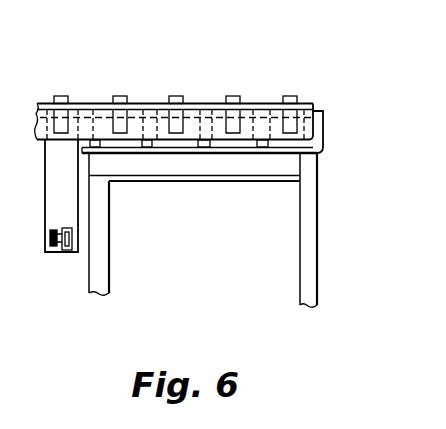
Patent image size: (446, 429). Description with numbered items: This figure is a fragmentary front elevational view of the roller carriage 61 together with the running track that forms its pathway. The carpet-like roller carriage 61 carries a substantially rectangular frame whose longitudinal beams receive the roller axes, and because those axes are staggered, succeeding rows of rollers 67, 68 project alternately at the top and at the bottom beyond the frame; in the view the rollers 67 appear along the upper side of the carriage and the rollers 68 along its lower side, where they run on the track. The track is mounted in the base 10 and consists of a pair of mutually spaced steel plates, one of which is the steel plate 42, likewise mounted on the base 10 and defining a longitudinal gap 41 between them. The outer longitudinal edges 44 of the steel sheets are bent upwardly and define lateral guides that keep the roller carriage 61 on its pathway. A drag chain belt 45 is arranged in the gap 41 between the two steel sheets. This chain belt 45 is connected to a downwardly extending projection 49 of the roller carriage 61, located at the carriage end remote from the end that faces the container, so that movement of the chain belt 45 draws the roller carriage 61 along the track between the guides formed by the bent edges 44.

The base 10 is at (103, 272).
The longitudinal gap 41 is at (70, 257).
The steel plate 42 is at (220, 153).
The outer longitudinal edge 44 is at (321, 112).
The drag chain belt 45 is at (60, 252).
The downwardly extending projection 49 is at (56, 190).
The roller carriage 61 is at (206, 98).
The roller 67 is at (61, 96).
The roller 68 is at (97, 148).